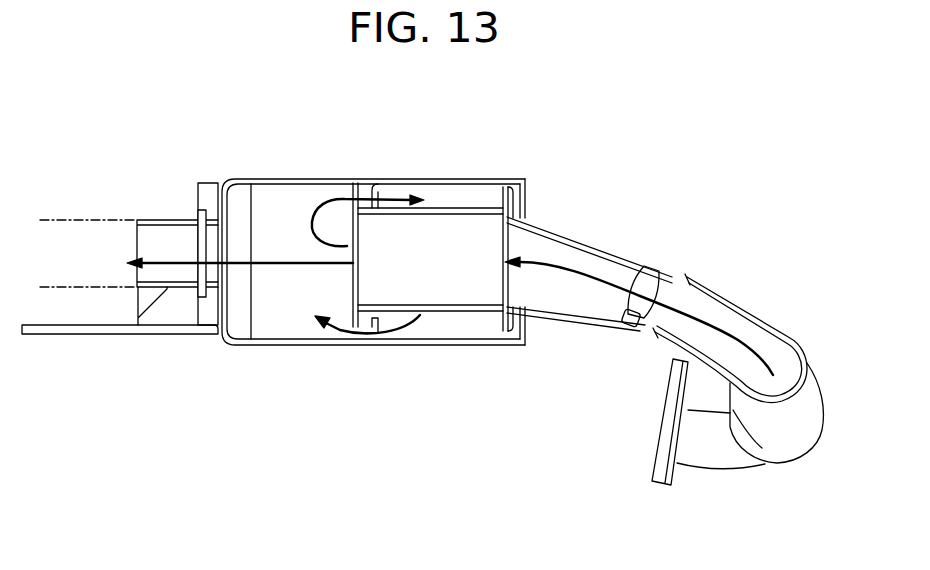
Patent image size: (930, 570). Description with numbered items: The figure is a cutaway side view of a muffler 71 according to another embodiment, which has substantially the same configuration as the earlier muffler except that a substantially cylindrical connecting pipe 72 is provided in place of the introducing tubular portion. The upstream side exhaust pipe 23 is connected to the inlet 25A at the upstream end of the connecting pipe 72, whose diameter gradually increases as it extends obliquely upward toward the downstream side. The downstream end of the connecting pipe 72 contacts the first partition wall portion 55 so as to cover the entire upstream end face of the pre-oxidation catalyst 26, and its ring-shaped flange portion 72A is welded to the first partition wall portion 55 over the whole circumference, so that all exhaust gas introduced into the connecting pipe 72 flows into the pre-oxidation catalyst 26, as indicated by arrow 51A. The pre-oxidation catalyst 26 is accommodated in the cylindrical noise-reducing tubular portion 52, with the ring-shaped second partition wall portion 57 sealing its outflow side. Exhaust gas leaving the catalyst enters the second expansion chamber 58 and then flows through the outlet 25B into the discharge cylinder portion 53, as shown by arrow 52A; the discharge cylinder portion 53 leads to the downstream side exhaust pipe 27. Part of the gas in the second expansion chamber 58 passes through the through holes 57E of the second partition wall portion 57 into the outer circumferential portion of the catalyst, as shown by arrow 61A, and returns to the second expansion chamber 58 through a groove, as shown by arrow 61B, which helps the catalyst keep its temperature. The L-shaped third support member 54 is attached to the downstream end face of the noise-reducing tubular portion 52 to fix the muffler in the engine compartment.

The muffler 71 is at (273, 152).
The noise-reducing tubular portion 52 is at (292, 181).
The arrow 52A is at (305, 265).
The second expansion chamber 58 is at (278, 305).
The second partition wall portion 57 is at (368, 198).
The through holes 57E is at (397, 198).
The arrow 61A is at (335, 197).
The arrow 61B is at (418, 327).
The first partition wall portion 55 is at (515, 197).
The pre-oxidation catalyst 26 is at (468, 312).
The connecting pipe 72 is at (607, 247).
The flange portion 72A is at (527, 208).
The arrow 51A is at (637, 272).
The inlet 25A is at (625, 328).
The upstream side exhaust pipe 23 is at (770, 322).
The downstream side exhaust pipe 27 is at (63, 220).
The outlet 25B is at (195, 242).
The discharge cylinder portion 53 is at (147, 287).
The third support member 54 is at (55, 334).